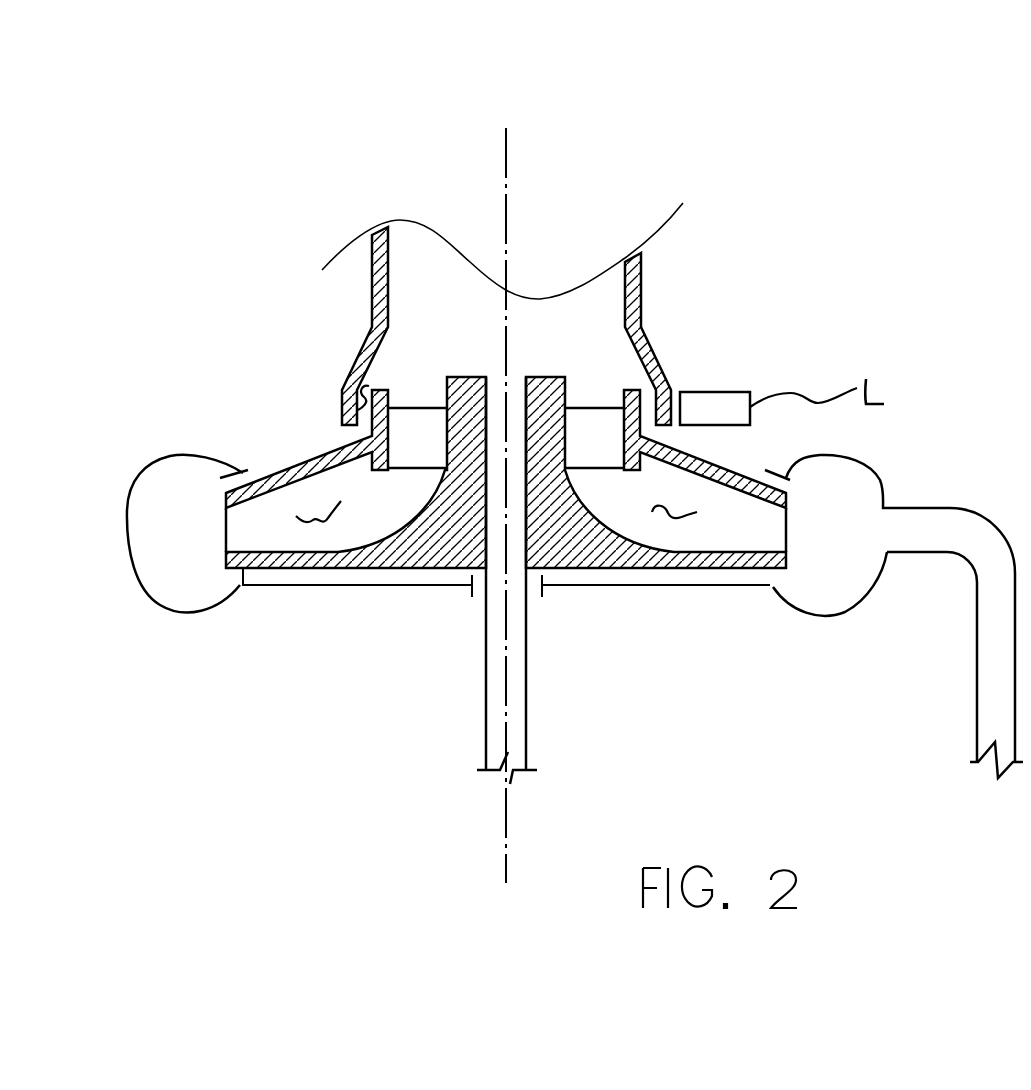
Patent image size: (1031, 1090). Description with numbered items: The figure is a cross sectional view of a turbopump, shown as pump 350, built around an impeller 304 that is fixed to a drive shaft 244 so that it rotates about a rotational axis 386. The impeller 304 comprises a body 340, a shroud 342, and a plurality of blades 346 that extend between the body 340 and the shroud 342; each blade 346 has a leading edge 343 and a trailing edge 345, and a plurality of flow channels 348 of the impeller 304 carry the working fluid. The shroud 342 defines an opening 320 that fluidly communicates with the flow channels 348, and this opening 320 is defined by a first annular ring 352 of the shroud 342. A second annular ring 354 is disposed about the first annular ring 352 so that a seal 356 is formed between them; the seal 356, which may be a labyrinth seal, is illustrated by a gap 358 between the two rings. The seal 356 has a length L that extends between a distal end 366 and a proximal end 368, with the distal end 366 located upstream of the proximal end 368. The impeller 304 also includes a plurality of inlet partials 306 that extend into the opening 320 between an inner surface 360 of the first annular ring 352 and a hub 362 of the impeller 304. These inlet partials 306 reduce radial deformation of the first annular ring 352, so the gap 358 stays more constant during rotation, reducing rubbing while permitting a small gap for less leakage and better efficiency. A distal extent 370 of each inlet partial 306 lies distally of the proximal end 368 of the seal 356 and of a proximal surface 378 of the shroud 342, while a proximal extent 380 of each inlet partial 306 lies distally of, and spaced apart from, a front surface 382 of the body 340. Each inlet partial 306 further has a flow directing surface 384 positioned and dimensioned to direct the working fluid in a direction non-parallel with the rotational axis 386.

The drive shaft 244 is at (528, 715).
The impeller 304 is at (583, 566).
The inlet partials 306 is at (593, 470).
The opening 320 is at (600, 392).
The body 340 is at (733, 532).
The shroud 342 is at (287, 550).
The leading edge 343 is at (420, 408).
The trailing edge 345 is at (226, 533).
The blades 346 is at (267, 533).
The flow channels 348 is at (314, 527).
The pump 350 is at (639, 768).
The first annular ring 352 is at (407, 408).
The second annular ring 354 is at (340, 407).
The seal 356 is at (647, 392).
The gap 358 is at (342, 390).
The inner surface 360 is at (600, 405).
The hub 362 is at (467, 377).
The distal end 366 is at (727, 392).
The proximal end 368 is at (727, 425).
The distal extent 370 is at (440, 408).
The proximal surface 378 is at (787, 528).
The proximal extent 380 is at (418, 470).
The front surface 382 is at (283, 507).
The flow directing surface 384 is at (430, 472).
The rotational axis 386 is at (508, 843).